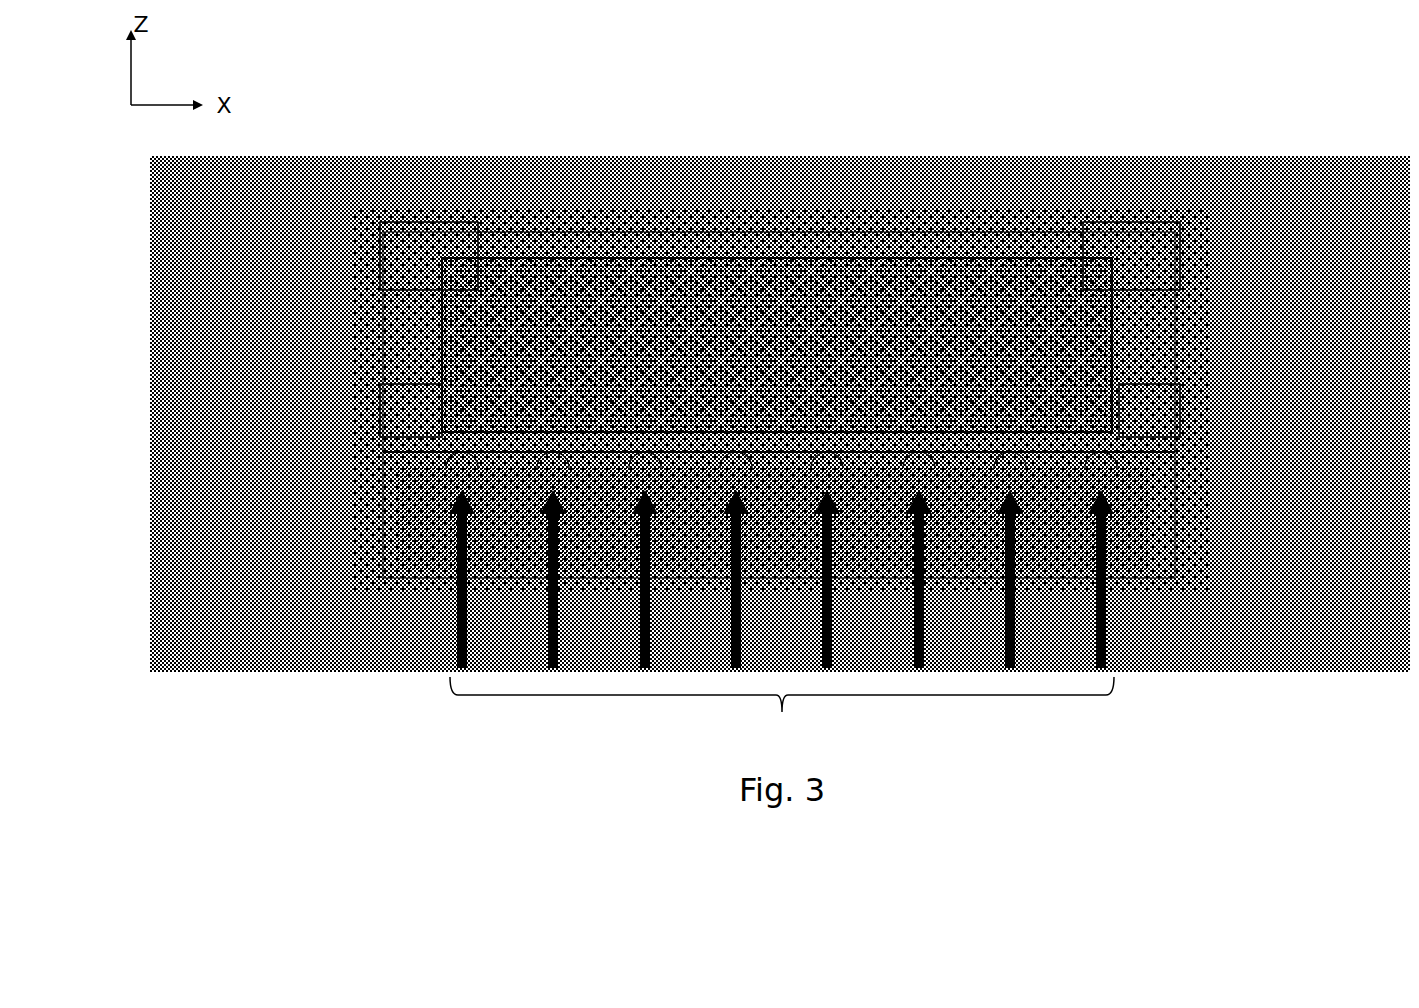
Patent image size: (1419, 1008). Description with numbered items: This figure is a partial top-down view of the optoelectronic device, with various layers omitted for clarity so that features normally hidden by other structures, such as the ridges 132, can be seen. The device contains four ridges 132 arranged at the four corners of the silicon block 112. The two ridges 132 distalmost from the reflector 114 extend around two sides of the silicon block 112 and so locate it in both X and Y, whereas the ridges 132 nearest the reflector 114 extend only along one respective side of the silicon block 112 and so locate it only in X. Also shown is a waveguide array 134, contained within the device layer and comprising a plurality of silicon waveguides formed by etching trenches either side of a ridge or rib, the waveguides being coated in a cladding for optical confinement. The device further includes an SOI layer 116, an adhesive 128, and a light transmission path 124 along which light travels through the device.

The silicon block 112 is at (611, 253).
The reflector 114 is at (691, 494).
The SOI layer 116 is at (270, 228).
The light transmission path 124 is at (552, 580).
The adhesive 128 is at (815, 218).
The ridge 132 is at (406, 256).
The waveguide array 134 is at (782, 714).